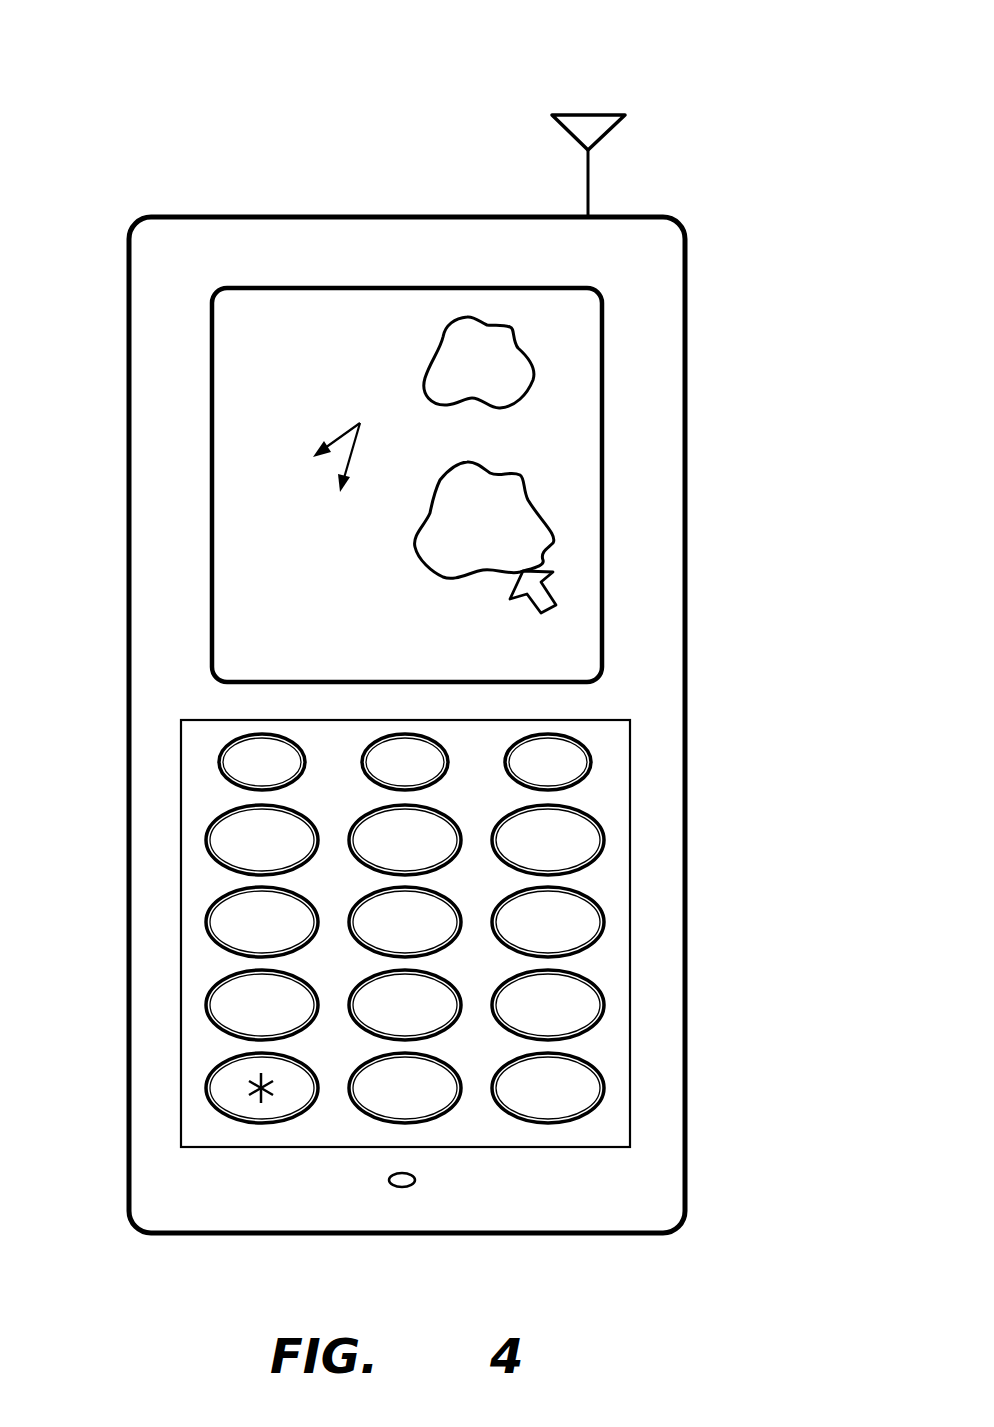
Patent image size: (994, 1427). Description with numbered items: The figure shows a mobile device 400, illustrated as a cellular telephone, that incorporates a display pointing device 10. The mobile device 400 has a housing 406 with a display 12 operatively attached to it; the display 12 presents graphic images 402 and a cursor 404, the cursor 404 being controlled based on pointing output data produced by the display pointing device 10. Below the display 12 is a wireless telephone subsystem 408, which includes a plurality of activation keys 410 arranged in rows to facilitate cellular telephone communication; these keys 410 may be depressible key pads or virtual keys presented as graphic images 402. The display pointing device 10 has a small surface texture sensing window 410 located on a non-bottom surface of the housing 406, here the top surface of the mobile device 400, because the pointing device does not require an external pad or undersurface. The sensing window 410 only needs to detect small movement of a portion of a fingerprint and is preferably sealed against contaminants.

The mobile device 400 is at (834, 55).
The display pointing device 10 is at (158, 1080).
The display 12 is at (568, 288).
The housing 406 is at (650, 217).
The graphic images 402 is at (475, 402).
The cursor 404 is at (524, 602).
The wireless telephone subsystem 408 is at (160, 870).
The activation keys / surface texture sensing window 410 is at (606, 806).